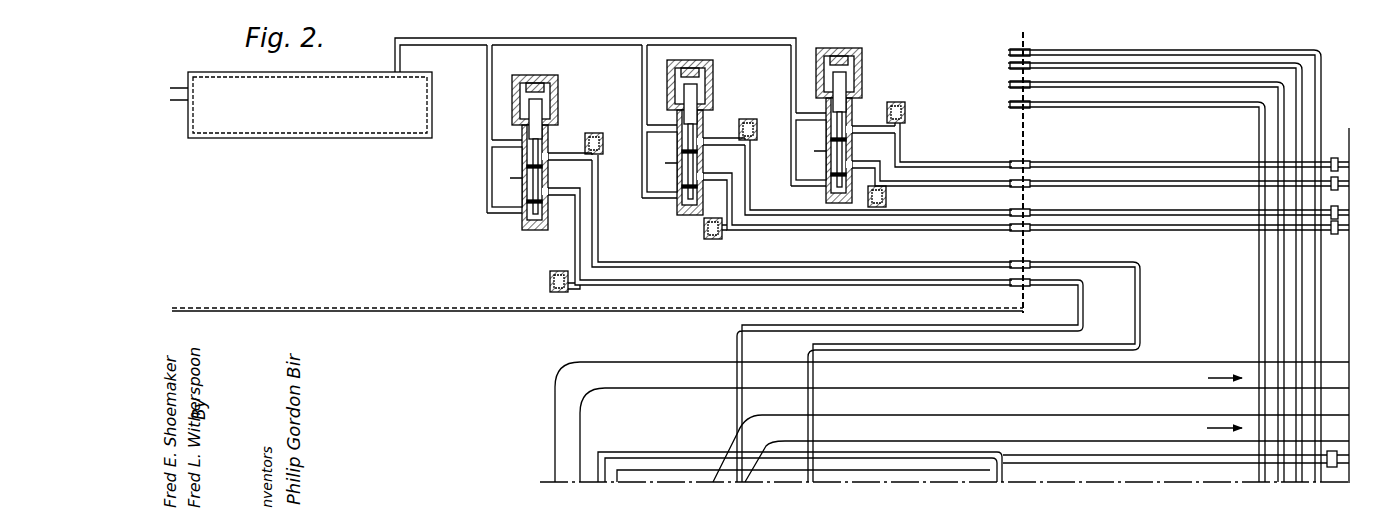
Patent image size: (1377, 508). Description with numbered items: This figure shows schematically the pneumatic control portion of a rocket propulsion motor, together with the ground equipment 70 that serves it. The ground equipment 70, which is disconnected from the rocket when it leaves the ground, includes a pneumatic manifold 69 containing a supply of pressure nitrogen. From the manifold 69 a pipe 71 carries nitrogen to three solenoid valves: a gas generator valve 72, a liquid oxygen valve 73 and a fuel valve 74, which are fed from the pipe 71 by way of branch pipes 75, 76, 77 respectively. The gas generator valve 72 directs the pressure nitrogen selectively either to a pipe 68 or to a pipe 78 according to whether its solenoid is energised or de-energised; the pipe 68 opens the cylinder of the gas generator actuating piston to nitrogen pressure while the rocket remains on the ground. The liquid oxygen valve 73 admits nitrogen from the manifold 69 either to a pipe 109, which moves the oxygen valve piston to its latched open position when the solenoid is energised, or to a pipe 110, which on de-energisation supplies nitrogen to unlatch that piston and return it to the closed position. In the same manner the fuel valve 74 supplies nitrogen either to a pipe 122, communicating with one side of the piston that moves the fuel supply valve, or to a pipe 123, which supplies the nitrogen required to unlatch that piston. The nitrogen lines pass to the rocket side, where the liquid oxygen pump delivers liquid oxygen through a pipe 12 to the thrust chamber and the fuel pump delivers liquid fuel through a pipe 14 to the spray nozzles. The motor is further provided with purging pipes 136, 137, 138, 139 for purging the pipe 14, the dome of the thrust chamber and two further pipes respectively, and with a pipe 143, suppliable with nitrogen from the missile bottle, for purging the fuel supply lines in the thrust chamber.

The pneumatic manifold 69 is at (332, 139).
The pipe 71 is at (450, 39).
The branch pipe 75 is at (487, 96).
The branch pipe 77 is at (791, 158).
The gas generator valve 72 is at (723, 34).
The liquid oxygen valve 73 is at (727, 34).
The fuel valve 74 is at (808, 27).
The branch pipe 76 is at (723, 34).
The pipe 68 is at (930, 264).
The pipe 78 is at (628, 279).
The pipe 109 is at (752, 178).
The pipe 110 is at (790, 234).
The pipe 122 is at (950, 152).
The pipe 123 is at (943, 181).
The purging pipe 136 is at (1085, 56).
The purging pipe 137 is at (1118, 70).
The purging pipe 138 is at (1165, 90).
The purging pipe 139 is at (1203, 108).
The ground equipment 70 is at (278, 308).
The pipe 14 is at (555, 411).
The pipe 12 is at (1188, 417).
The purging pipe 143 is at (648, 452).